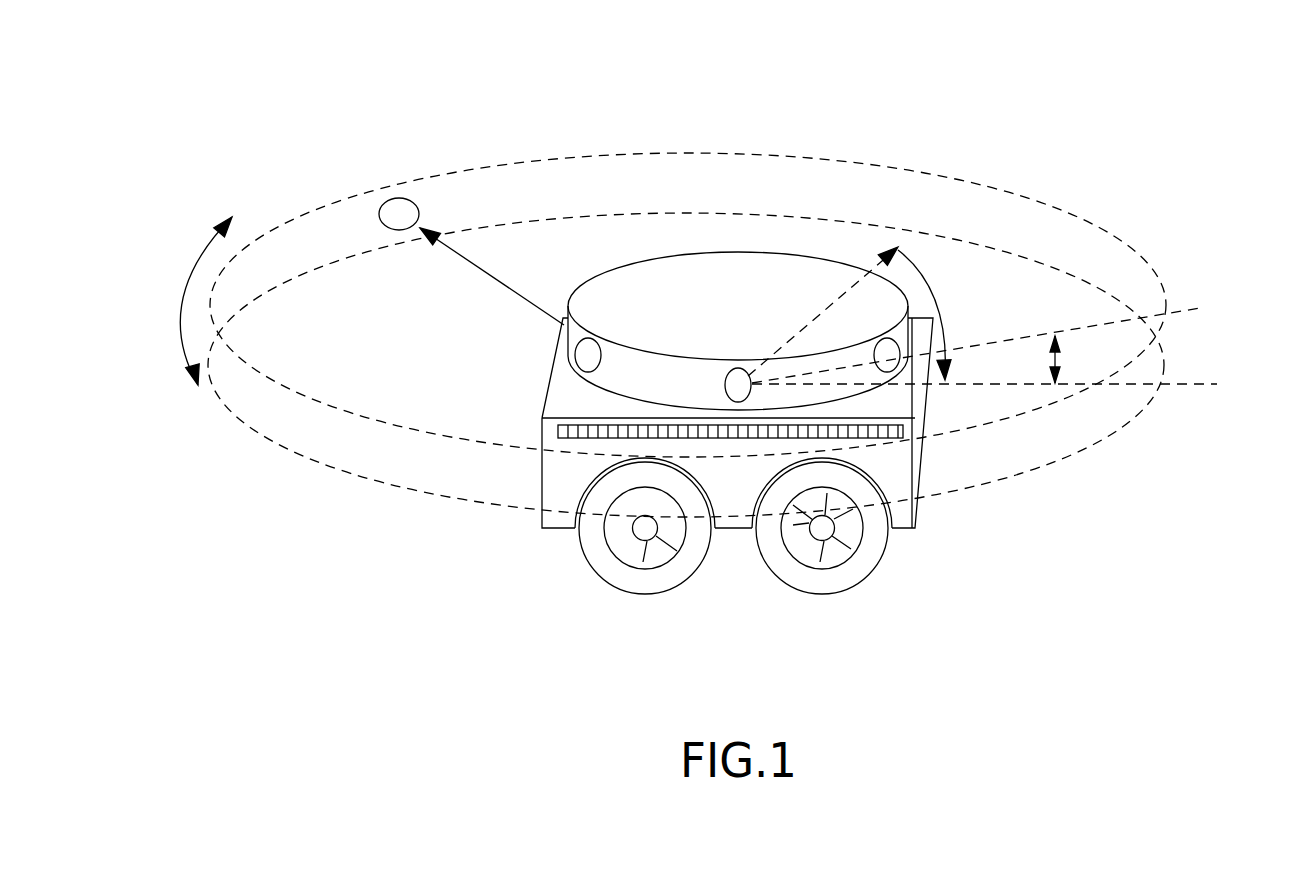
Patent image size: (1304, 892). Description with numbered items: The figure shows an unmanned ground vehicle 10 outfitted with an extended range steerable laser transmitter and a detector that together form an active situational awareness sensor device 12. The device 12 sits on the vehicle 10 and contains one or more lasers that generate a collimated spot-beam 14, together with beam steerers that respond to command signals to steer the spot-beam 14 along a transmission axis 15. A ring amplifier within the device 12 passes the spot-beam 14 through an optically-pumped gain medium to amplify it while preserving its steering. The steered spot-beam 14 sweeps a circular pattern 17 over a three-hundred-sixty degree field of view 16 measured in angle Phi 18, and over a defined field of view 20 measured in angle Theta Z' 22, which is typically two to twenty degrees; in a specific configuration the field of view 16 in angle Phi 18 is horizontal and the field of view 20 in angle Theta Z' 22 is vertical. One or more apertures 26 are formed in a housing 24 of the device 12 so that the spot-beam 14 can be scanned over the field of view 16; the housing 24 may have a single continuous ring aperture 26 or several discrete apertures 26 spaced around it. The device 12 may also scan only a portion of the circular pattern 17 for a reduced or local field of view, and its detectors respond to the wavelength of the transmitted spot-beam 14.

The unmanned ground vehicle 10 is at (497, 588).
The active situational awareness sensor device 12 is at (628, 243).
The collimated spot-beam 14 is at (385, 203).
The transmission axis 15 is at (505, 285).
The 360° field of view 16 is at (668, 155).
The circular pattern 17 is at (176, 297).
The angle Phi 18 is at (946, 331).
The defined field of view 20 is at (406, 430).
The angle Theta Z' 22 is at (1060, 355).
The housing 24 is at (884, 243).
The aperture 26 is at (1090, 327).